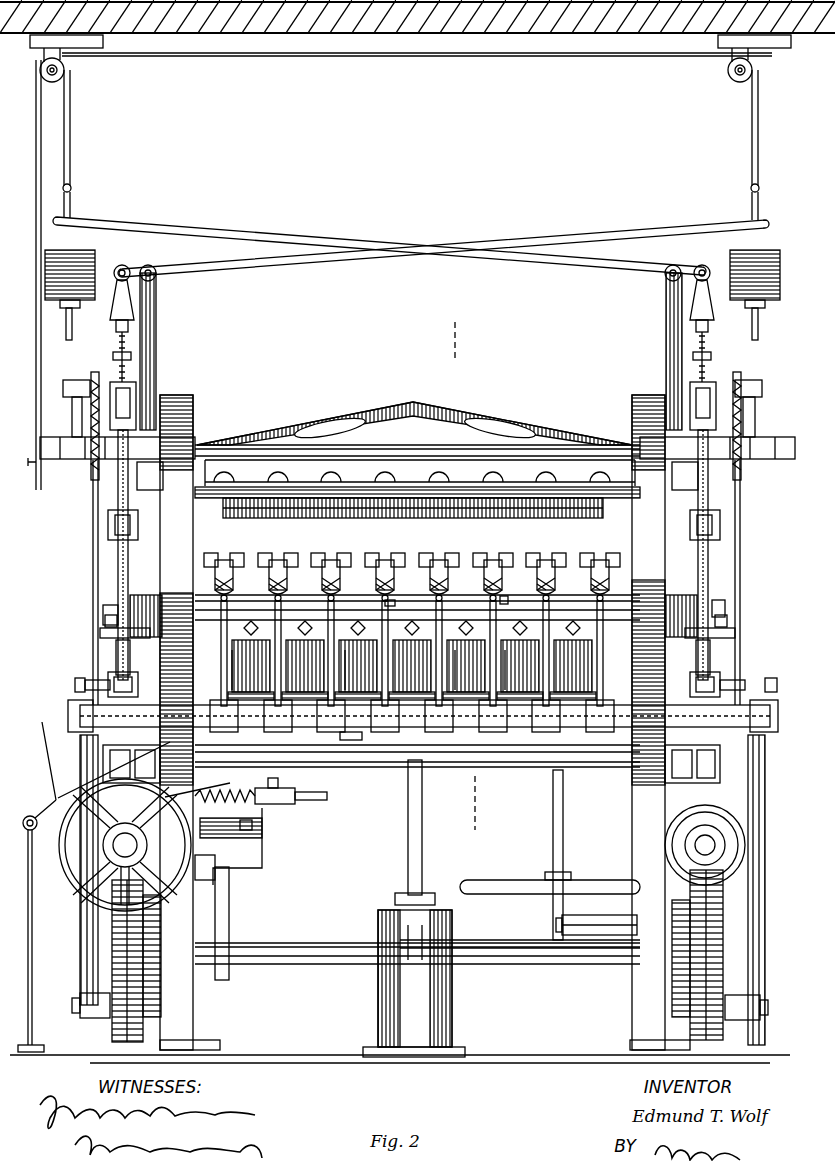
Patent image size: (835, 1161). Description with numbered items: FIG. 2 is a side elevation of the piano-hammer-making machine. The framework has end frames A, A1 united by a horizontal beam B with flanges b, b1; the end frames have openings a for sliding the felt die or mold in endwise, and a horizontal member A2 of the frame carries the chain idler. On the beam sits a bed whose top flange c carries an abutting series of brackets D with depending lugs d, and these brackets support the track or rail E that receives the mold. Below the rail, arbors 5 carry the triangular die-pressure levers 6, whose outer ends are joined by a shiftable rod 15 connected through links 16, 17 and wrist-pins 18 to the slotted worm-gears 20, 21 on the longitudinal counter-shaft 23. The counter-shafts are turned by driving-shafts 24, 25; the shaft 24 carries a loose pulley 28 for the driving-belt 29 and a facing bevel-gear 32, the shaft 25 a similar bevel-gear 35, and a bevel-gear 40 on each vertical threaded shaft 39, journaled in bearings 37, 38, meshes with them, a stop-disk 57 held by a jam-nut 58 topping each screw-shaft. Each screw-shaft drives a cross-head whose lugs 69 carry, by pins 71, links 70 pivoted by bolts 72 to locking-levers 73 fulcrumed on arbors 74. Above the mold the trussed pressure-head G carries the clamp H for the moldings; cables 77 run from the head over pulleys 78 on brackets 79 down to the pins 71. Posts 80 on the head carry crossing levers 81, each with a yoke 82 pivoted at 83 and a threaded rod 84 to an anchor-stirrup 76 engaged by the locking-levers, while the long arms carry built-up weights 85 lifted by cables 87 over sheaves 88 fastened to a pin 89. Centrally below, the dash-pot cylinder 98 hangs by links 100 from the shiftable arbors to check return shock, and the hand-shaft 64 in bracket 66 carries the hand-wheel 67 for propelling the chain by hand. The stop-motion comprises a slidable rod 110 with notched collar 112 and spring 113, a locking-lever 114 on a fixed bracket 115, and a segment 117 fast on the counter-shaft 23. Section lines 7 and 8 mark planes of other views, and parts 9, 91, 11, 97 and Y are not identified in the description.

The overhead sheaves 88 is at (64, 82).
The straps or cables 87 is at (70, 133).
The levers 81 is at (290, 228).
The pivot 83 is at (125, 266).
The weight 85 is at (90, 290).
The yoke 82 is at (118, 310).
The upstanding posts 80 is at (156, 340).
The threaded rod 84 is at (118, 348).
The pulleys 78 is at (91, 372).
The anchor-stirrup 76 is at (136, 392).
The upstanding brackets 79 is at (72, 412).
The pin 89 is at (27, 465).
The locking-levers 73 is at (108, 484).
The cables 77 is at (93, 520).
The end frame A is at (126, 582).
The end frame A1 is at (640, 516).
The horizontal pressure-head G is at (414, 414).
The arbors 74 is at (530, 445).
The arch guides 91 is at (300, 482).
The horizontal clamp H is at (215, 498).
The comb Y is at (413, 519).
The section line 7 7 is at (233, 582).
The plunger head 11 is at (278, 560).
The plunger rod 9 is at (338, 590).
The brackets D is at (290, 600).
The track or rail E is at (401, 587).
The depending lugs d is at (509, 606).
The pressure-levers 6 is at (412, 660).
The openings a is at (241, 670).
The horizontal beam B is at (356, 697).
The flange b is at (455, 670).
The top flange c is at (508, 670).
The pins or bolts 72 is at (138, 530).
The links 70 is at (118, 575).
The shaft-bearing 38 is at (150, 593).
The jam-nut 58 is at (105, 620).
The stop-disk 57 is at (100, 633).
The vertical threaded shafts 39 is at (116, 650).
The lugs 69 is at (108, 680).
The transverse pins or bolts 71 is at (90, 680).
The horizontal arbors 5 is at (75, 684).
The shiftable rod 15 is at (778, 716).
The flange b1 is at (354, 742).
The horizontal member A2 is at (330, 767).
The shaft-bearing 37 is at (411, 764).
The driving-belt 29 is at (31, 887).
The loose pulley 28 is at (72, 776).
The driving-shaft 24 is at (118, 858).
The bevel-gear 40 is at (197, 779).
The coiled spring 113 is at (225, 795).
The notched collar 112 is at (272, 790).
The slidable rod 110 is at (318, 802).
The fixed bracket 115 is at (231, 837).
The locking-lever 114 is at (262, 853).
The bevel-gear 35 is at (175, 905).
The segment 117 is at (229, 905).
The links or rods 17 is at (80, 930).
The worm-gear 21 is at (112, 950).
The pinion 97 is at (161, 995).
The wrist-pins 18 is at (82, 1015).
The links 100 is at (422, 805).
The section line 8 8 is at (464, 577).
The hand-shaft 64 is at (563, 815).
The hand-wheel 67 is at (490, 894).
The fixed bracket 66 is at (580, 920).
The counter-shaft 23 is at (325, 966).
The dash-pot cylinder 98 is at (452, 1000).
The bevel-gear 32 is at (740, 820).
The driving-shaft 25 is at (706, 845).
The links or rods 16 is at (765, 893).
The worm-gear 20 is at (723, 950).